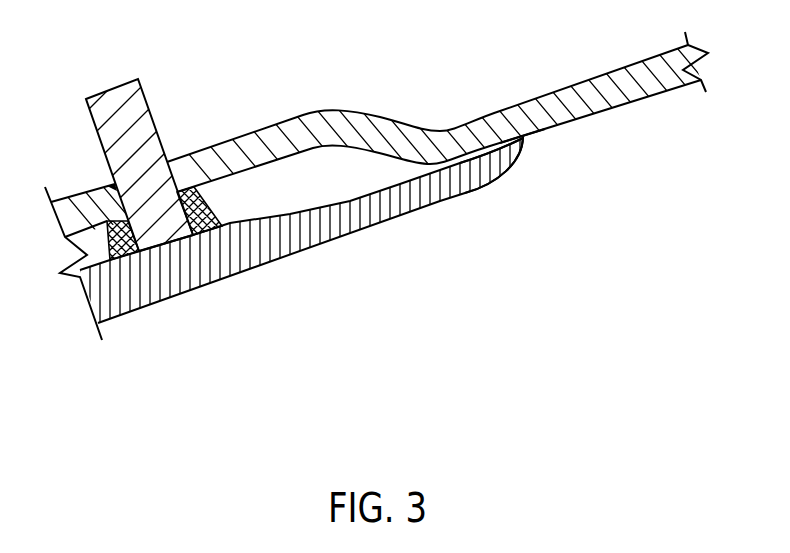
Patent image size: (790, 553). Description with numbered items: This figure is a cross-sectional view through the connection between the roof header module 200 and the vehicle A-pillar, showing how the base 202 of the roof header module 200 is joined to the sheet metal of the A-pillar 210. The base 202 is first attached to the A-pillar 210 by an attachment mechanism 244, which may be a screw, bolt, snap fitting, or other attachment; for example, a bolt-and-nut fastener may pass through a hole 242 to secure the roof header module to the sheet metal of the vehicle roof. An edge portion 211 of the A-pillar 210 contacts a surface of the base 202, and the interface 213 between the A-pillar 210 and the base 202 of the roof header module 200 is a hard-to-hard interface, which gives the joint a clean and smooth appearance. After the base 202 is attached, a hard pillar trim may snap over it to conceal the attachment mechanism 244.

The roof header module 200 is at (655, 104).
The base 202 is at (602, 97).
The A-pillar 210 is at (230, 262).
The edge portion 211 is at (483, 167).
The interface 213 is at (524, 142).
The hole 242 is at (108, 186).
The attachment mechanism 244 is at (130, 113).